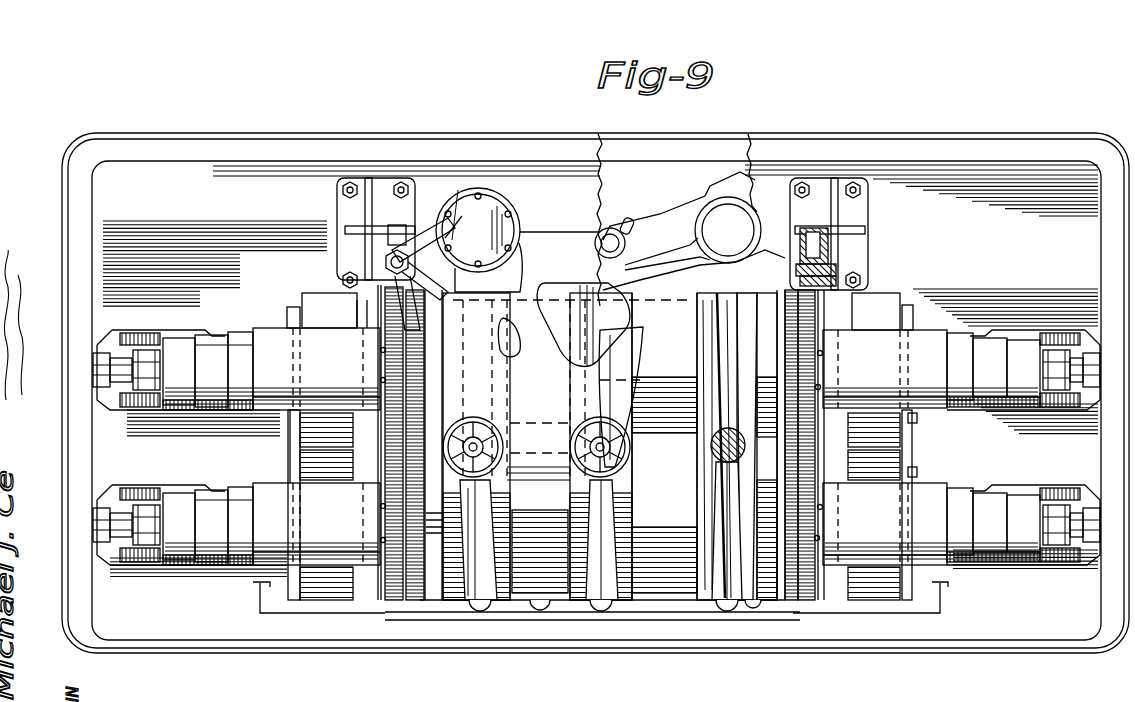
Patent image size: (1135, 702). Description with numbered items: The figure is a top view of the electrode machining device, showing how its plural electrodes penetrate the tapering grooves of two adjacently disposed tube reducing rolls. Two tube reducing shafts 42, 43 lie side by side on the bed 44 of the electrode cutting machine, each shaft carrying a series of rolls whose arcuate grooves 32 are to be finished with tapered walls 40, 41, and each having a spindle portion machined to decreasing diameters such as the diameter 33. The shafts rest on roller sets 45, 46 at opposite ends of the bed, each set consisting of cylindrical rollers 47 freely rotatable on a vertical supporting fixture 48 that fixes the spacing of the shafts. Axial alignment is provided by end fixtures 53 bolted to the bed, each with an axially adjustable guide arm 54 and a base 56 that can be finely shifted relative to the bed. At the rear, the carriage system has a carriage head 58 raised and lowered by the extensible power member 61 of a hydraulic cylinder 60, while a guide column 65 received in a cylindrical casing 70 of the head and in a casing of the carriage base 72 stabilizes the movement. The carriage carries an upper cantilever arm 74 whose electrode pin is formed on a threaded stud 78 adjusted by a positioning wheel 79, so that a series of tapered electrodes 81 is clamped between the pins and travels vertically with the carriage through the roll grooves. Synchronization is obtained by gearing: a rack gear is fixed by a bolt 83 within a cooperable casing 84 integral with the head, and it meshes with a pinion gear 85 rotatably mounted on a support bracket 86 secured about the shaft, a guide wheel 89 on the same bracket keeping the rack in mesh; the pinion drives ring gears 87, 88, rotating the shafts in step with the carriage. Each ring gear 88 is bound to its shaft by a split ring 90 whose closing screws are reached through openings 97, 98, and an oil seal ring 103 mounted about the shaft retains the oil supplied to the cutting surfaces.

The bed 44 is at (60, 246).
The support bracket 86 is at (388, 195).
The guide wheel 89 is at (420, 232).
The pinion gear 85 is at (390, 262).
The ring gear 87 is at (366, 326).
The cylindrical casing 70 is at (483, 250).
The cooperable casing 84 is at (486, 226).
The bolt 83 is at (458, 200).
The carriage head 58 is at (534, 272).
The guide column 65 is at (727, 204).
The carriage base 72 is at (667, 247).
The hydraulic cylinder 60 is at (614, 232).
The extensible power member 61 is at (630, 222).
The upper cantilever arm 74 is at (538, 342).
The threaded stud 78 is at (486, 440).
The positioning wheel 79 is at (484, 447).
The tapered electrodes 81 is at (712, 452).
The tapered wall 41 is at (716, 330).
The arcuate groove 32 is at (720, 340).
The tapered wall 40 is at (712, 372).
The ring gear 88 is at (393, 604).
The split ring 90 is at (382, 602).
The oil seal ring 103 is at (430, 598).
The cylindrical rollers 47 is at (310, 305).
The vertical supporting fixture 48 is at (288, 320).
The spindle diameter 33 is at (283, 360).
The tube reducing shaft 43 is at (232, 332).
The tube reducing shaft 42 is at (241, 480).
The roller set 46 is at (912, 452).
The roller set 45 is at (286, 446).
The base 56 is at (100, 384).
The guide arm 54 is at (142, 352).
The end fixture 53 is at (100, 366).
The opening 97 is at (382, 351).
The opening 98 is at (382, 380).